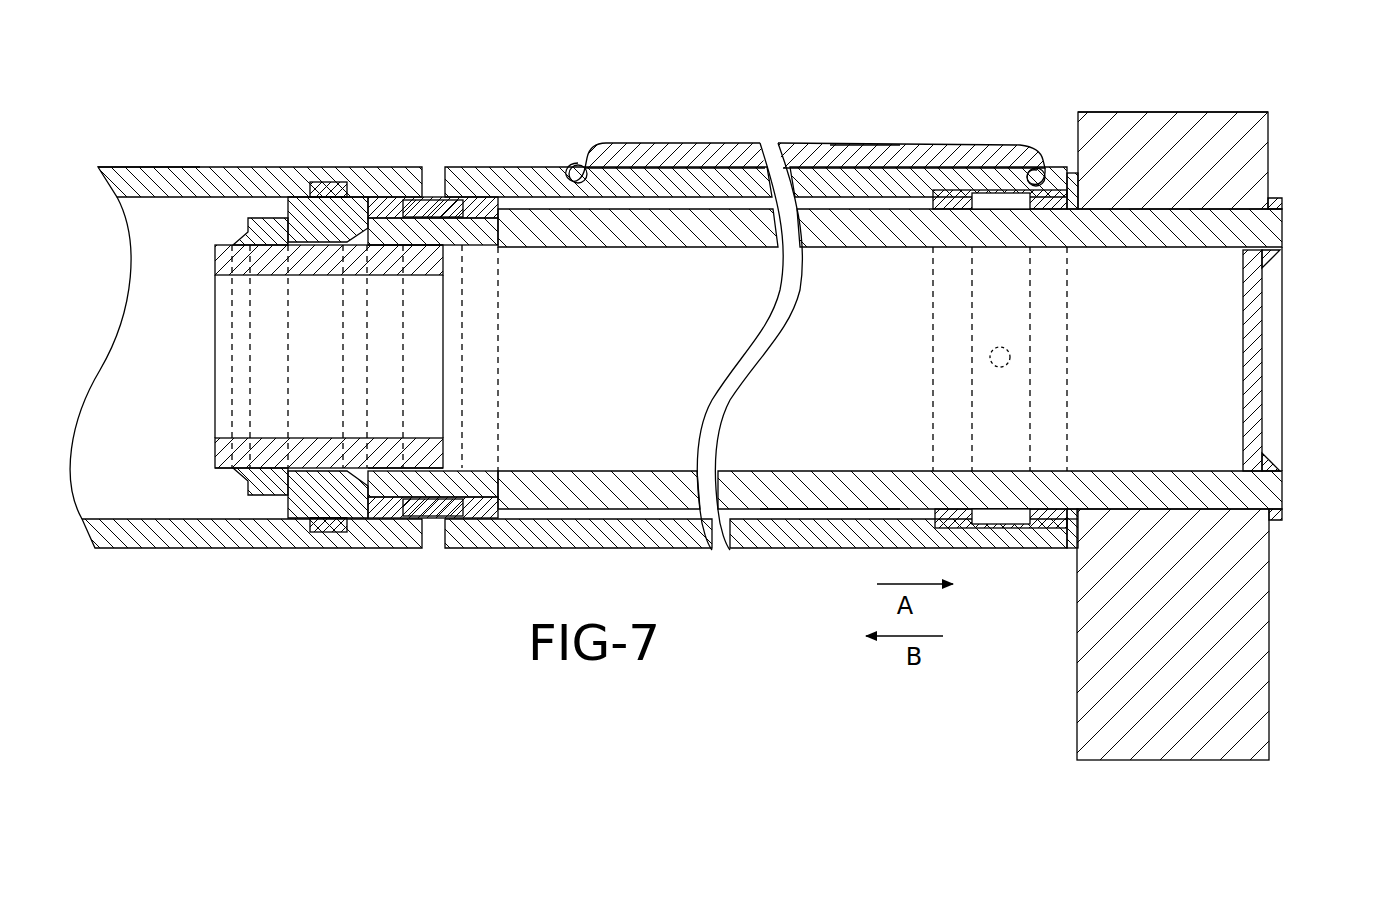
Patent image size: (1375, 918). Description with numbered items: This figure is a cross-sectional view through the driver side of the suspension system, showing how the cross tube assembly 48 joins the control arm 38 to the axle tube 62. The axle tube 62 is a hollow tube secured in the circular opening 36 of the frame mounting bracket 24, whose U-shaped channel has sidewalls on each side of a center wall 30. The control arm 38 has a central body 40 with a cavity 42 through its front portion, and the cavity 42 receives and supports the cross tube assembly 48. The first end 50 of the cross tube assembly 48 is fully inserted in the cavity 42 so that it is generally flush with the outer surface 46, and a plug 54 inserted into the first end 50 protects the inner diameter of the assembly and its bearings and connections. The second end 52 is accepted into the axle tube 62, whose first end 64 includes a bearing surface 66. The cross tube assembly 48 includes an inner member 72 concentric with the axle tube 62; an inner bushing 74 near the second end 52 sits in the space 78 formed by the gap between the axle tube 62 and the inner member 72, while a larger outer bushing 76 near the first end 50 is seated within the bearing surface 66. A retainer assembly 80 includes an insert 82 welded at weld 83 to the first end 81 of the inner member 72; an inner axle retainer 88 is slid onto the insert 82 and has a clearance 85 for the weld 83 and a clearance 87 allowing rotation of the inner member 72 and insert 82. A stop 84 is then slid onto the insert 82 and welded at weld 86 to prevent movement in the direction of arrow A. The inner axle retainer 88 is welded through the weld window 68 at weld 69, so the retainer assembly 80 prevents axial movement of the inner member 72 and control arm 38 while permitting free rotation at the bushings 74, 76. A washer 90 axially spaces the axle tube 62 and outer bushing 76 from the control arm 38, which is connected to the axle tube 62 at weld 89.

The frame mounting bracket 24 is at (810, 143).
The center wall 30 is at (712, 143).
The opening 36 is at (581, 166).
The control arm 38 is at (1207, 108).
The central body 40 is at (1132, 138).
The cavity 42 is at (1264, 505).
The outer surface 46 is at (1272, 590).
The cross tube assembly 48 is at (813, 516).
The first end 50 is at (1080, 196).
The second end 52 is at (205, 393).
The plug 54 is at (1258, 316).
The axle tube 62 is at (157, 163).
The first end 64 is at (1085, 540).
The bearing surface 66 is at (1005, 200).
The weld window 68 is at (326, 182).
The weld 69 is at (337, 196).
The inner member 72 is at (589, 470).
The inner bushing 74 is at (478, 518).
The outer bushing 76 is at (998, 528).
The space 78 is at (688, 166).
The retainer assembly 80 is at (221, 491).
The first end 81 is at (383, 470).
The insert 82 is at (216, 452).
The weld 83 is at (378, 255).
The stop 84 is at (263, 496).
The clearance 85 is at (352, 238).
The weld 86 is at (246, 216).
The clearance 87 is at (305, 255).
The inner axle retainer 88 is at (306, 512).
The weld 89 is at (1282, 206).
The washer 90 is at (1076, 522).